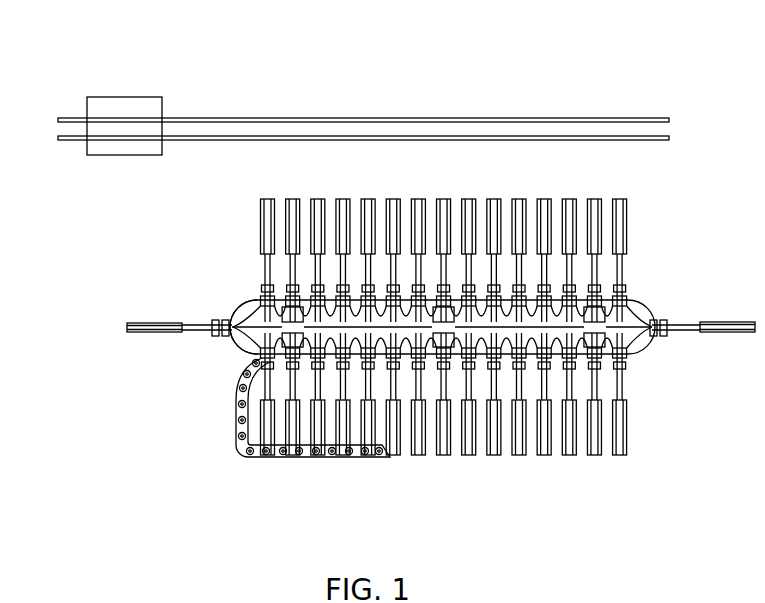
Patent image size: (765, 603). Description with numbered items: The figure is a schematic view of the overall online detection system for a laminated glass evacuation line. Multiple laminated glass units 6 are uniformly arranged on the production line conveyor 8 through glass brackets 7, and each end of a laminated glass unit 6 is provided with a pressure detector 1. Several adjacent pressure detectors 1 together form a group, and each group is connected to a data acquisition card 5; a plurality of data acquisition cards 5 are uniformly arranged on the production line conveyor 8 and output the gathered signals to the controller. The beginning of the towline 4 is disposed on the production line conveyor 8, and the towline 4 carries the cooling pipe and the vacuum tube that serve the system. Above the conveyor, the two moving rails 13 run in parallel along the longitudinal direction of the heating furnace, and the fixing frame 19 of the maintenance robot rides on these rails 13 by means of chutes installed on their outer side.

The pressure detector 1 is at (250, 299).
The towline 4 is at (240, 410).
The data acquisition card 5 is at (238, 333).
The laminated glass unit 6 is at (262, 237).
The glass bracket 7 is at (262, 287).
The production line conveyor 8 is at (235, 313).
The moving rail 13 is at (222, 118).
The fixing frame 19 is at (122, 105).